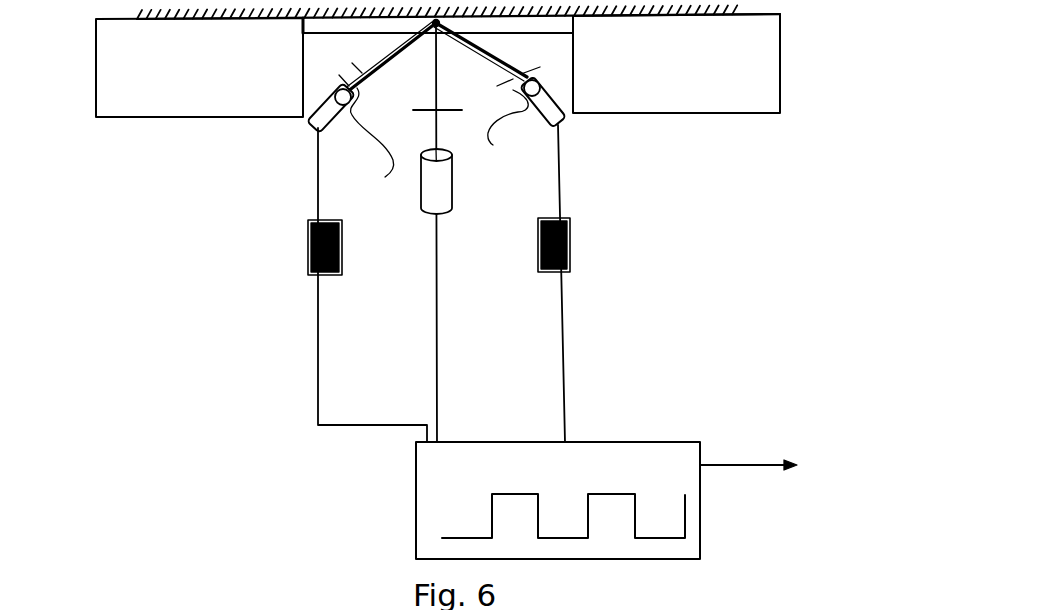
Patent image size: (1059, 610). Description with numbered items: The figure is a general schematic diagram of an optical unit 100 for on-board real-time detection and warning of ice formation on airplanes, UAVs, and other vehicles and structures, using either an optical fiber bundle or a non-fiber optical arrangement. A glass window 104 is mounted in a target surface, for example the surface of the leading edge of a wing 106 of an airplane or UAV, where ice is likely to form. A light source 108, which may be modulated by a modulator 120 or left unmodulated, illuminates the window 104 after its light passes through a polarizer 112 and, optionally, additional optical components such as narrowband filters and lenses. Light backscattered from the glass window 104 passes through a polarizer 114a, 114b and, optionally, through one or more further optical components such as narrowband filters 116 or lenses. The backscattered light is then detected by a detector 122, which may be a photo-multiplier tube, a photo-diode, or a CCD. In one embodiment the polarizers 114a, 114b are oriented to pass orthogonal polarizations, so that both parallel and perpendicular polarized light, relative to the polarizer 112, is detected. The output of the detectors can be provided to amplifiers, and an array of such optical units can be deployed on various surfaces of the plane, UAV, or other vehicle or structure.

The optical unit 100 is at (226, 344).
The glass window 104 is at (347, 34).
The wing 106 is at (120, 118).
The light source 108 is at (453, 200).
The polarizer 112 is at (462, 110).
The polarizer 114a is at (377, 90).
The polarizer 114b is at (527, 60).
The narrowband filter 116 is at (442, 136).
The modulator 120 is at (641, 442).
The detector 122 is at (308, 243).